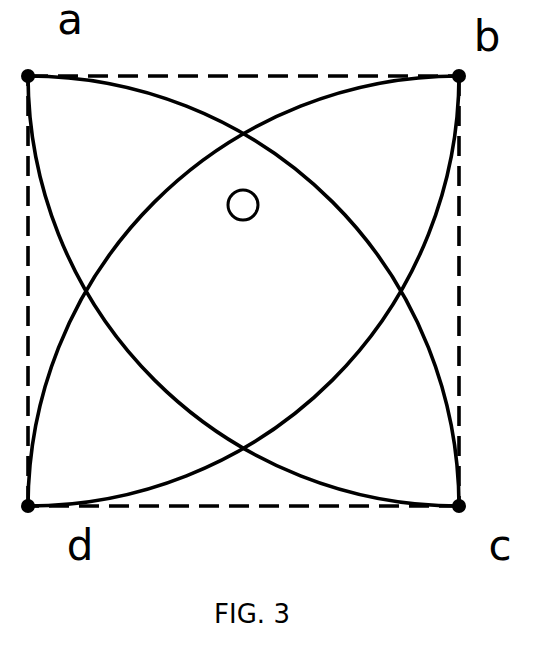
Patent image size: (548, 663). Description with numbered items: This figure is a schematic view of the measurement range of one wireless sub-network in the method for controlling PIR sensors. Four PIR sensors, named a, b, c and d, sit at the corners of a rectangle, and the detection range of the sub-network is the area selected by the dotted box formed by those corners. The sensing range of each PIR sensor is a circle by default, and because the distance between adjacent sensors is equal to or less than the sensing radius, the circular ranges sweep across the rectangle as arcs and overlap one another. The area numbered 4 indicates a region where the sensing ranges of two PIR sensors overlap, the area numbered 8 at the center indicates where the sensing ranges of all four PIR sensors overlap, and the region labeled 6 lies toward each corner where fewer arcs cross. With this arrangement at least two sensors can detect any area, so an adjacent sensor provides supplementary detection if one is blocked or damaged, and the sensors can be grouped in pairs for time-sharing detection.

The area where two sensing ranges overlap 4 is at (243, 290).
The corner regions of the square 6 is at (243, 291).
The area where four sensing ranges overlap 8 is at (243, 291).